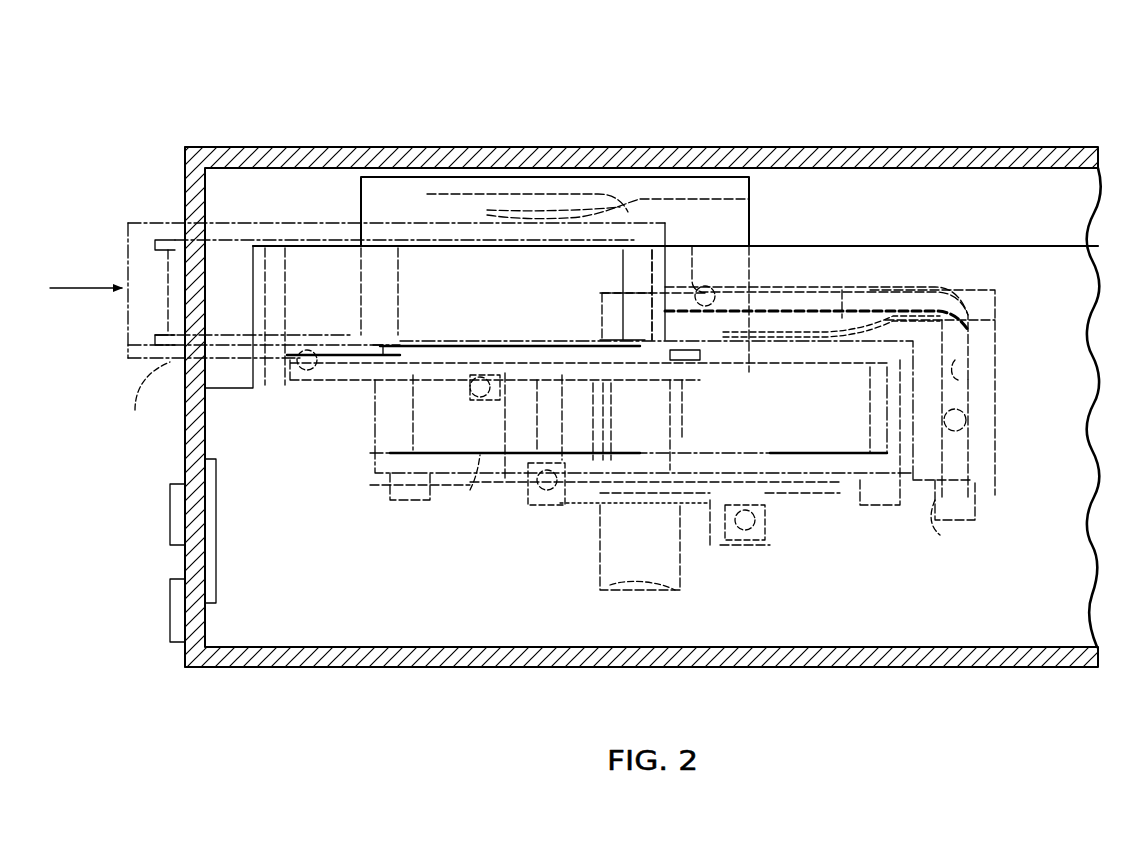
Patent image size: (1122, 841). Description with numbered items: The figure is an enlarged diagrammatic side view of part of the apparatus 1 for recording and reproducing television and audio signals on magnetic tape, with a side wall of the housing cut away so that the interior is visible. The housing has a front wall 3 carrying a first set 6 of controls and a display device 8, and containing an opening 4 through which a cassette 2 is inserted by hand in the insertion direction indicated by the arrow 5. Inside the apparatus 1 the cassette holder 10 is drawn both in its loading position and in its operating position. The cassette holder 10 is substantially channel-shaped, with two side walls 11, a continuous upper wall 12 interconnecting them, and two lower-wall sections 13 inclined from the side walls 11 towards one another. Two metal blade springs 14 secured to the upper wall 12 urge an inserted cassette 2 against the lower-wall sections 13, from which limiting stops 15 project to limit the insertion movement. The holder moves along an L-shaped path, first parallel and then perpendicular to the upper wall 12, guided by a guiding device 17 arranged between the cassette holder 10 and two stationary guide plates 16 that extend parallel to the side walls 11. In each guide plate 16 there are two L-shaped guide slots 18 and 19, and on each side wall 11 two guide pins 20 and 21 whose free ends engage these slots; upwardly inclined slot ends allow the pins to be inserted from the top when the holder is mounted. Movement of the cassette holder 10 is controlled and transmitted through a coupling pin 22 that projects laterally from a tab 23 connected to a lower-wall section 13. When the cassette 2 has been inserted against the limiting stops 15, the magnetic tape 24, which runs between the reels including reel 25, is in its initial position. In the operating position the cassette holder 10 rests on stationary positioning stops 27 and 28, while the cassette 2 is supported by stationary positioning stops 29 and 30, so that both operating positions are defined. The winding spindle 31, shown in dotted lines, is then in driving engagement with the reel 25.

The apparatus 1 is at (887, 146).
The cassette 2 is at (153, 222).
The front wall 3 is at (196, 432).
The opening 4 is at (211, 402).
The arrow 5 is at (78, 288).
The first set of controls 6 is at (160, 585).
The display device 8 is at (222, 548).
The cassette holder 10 is at (352, 203).
The side walls 11 is at (403, 178).
The upper wall 12 is at (516, 190).
The lower-wall sections 13 is at (340, 370).
The blade springs 14 is at (618, 212).
The limiting stops 15 is at (690, 373).
The guide plates 16 is at (948, 246).
The guiding device 17 is at (815, 282).
The guide slot 18 is at (508, 480).
The guide slot 19 is at (968, 373).
The guide pin 20 is at (330, 368).
The guide pin 21 is at (718, 280).
The coupling pin 22 is at (475, 388).
The tab 23 is at (470, 490).
The magnetic tape 24 is at (623, 256).
The reel 25 is at (142, 236).
The positioning stop 27 is at (612, 548).
The positioning stop 28 is at (960, 520).
The positioning stop 29 is at (410, 503).
The positioning stop 30 is at (880, 508).
The winding spindle 31 is at (690, 428).